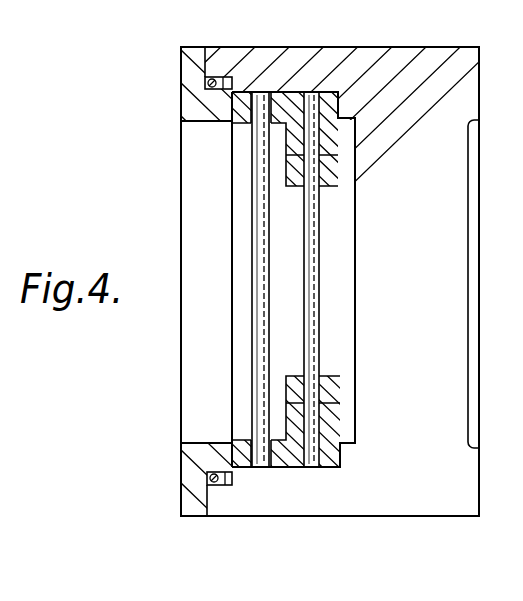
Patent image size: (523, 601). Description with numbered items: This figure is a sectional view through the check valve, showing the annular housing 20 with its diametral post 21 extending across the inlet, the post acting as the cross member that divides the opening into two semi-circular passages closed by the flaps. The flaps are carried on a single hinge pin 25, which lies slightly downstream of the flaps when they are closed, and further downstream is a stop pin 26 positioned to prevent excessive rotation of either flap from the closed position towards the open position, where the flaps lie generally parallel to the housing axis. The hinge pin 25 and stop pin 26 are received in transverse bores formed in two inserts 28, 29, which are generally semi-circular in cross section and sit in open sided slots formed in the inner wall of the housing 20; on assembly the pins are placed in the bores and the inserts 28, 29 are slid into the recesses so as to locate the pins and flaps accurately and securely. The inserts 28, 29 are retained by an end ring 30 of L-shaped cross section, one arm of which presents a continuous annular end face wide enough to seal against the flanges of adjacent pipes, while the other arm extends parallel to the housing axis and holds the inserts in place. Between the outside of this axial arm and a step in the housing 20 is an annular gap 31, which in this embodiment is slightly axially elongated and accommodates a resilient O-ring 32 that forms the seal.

The annular housing 20 is at (433, 483).
The diametral post 21 is at (421, 283).
The hinge pin 25 is at (315, 97).
The stop pin 26 is at (252, 209).
The insert 28 is at (286, 97).
The insert 29 is at (283, 458).
The end ring 30 is at (197, 493).
The annular gap 31 is at (226, 77).
The resilient O-ring 32 is at (208, 83).